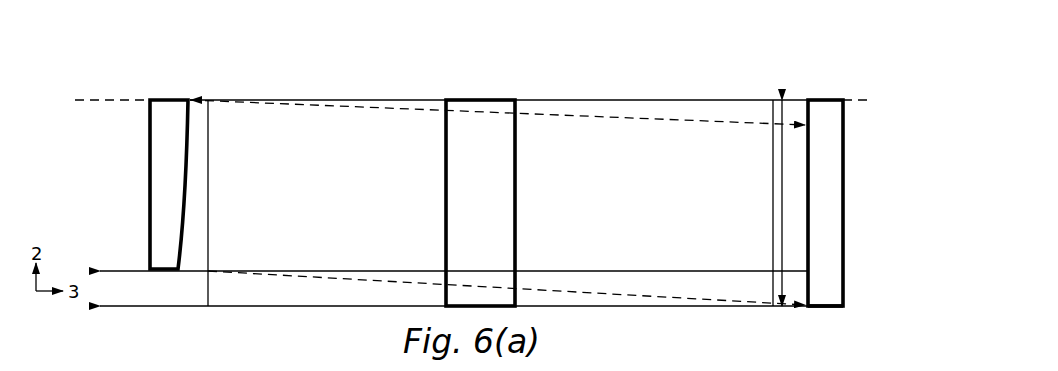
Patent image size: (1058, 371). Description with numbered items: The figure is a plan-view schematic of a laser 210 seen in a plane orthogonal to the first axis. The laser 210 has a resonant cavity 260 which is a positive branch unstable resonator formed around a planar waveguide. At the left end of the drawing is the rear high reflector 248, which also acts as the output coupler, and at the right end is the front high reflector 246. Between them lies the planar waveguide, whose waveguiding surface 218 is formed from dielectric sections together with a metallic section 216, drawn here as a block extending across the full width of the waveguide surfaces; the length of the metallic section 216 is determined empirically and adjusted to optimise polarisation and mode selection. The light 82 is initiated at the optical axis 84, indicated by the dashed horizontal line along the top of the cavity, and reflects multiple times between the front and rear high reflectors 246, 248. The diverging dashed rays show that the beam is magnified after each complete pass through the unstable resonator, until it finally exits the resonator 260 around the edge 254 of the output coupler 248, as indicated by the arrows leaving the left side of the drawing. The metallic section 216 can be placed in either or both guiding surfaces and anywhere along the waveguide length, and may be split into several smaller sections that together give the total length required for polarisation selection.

The laser 210 is at (748, 76).
The optical axis 84 is at (90, 100).
The light 82 is at (120, 308).
The edge of the output coupler 254 is at (162, 272).
The rear high reflector (output coupler) 248 is at (149, 173).
The metallic section 216 is at (480, 100).
The waveguiding surface 218 is at (357, 156).
The resonant cavity 260 is at (843, 170).
The front high reflector 246 is at (823, 307).